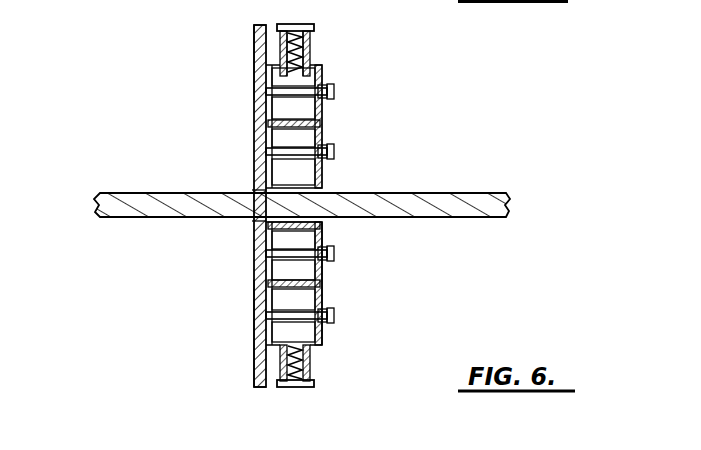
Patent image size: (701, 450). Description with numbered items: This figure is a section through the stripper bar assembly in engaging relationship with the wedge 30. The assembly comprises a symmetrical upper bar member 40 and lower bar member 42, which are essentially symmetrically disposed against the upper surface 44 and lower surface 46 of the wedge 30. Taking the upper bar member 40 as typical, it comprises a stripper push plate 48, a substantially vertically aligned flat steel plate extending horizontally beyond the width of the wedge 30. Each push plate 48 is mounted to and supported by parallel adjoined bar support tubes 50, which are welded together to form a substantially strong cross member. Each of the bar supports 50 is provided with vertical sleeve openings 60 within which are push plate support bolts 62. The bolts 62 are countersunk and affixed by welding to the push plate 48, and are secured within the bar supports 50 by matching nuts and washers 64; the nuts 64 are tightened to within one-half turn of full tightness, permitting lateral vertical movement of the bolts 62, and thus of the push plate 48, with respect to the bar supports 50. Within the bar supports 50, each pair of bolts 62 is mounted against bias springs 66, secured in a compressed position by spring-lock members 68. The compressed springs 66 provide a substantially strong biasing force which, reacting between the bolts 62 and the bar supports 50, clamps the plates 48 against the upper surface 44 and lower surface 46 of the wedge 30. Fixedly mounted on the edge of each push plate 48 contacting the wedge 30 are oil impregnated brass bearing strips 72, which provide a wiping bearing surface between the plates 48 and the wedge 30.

The wedge 30 is at (96, 200).
The upper bar member 40 is at (252, 38).
The lower bar member 42 is at (258, 292).
The upper surface 44 is at (184, 192).
The lower surface 46 is at (167, 218).
The stripper push plate 48 is at (254, 58).
The bar support tubes 50 is at (328, 290).
The vertical sleeve openings 60 is at (232, 118).
The push plate support bolts 62 is at (266, 92).
The nuts and washers 64 is at (334, 86).
The bias springs 66 is at (310, 76).
The spring-lock members 68 is at (295, 25).
The oil impregnated brass bearing strips 72 is at (252, 186).